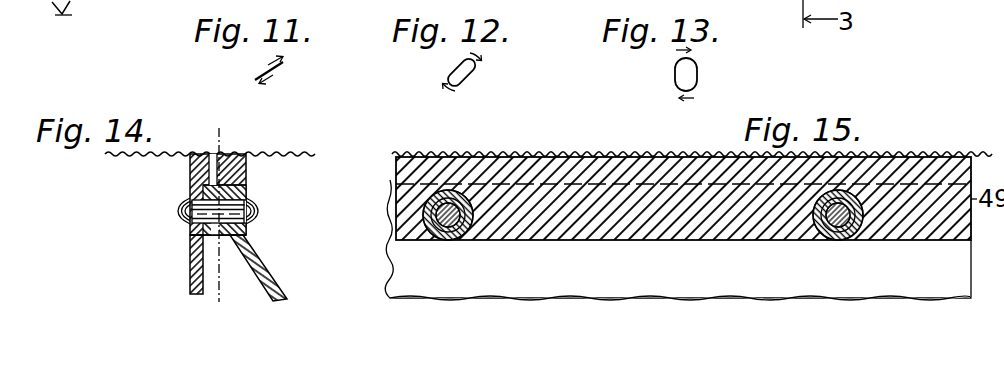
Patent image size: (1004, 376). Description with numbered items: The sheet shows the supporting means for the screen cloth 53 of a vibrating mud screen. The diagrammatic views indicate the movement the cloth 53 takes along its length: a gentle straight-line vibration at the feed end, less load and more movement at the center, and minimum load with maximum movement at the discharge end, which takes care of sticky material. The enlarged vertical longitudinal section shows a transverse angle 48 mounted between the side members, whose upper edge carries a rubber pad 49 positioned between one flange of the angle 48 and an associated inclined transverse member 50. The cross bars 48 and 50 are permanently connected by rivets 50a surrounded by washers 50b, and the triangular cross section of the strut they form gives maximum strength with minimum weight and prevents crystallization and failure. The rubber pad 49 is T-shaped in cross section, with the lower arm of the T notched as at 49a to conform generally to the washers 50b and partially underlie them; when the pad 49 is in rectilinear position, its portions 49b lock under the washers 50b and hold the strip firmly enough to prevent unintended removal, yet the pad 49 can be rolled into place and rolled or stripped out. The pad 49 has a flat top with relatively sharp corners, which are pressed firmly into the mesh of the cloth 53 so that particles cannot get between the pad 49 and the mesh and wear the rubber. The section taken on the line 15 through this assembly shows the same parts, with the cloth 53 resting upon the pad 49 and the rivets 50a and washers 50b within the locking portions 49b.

In FIG. 14, the section line 15 is at (222, 131).
In FIG. 14, the transverse angle 48 is at (190, 263).
In FIG. 15, the transverse angle 48 is at (390, 256).
In FIG. 14, the rubber pad 49 is at (190, 168).
In FIG. 15, the rubber pad 49 is at (615, 183).
In FIG. 14, the notch 49a is at (213, 154).
In FIG. 15, the notch 49a is at (443, 200).
In FIG. 15, the locking portions 49b is at (425, 240).
In FIG. 14, the inclined transverse member 50 is at (261, 263).
In FIG. 14, the rivet 50a is at (205, 216).
In FIG. 15, the rivet 50a is at (851, 274).
In FIG. 14, the washer 50b is at (205, 203).
In FIG. 15, the washer 50b is at (834, 240).
In FIG. 14, the screen cloth 53 is at (296, 153).
In FIG. 15, the screen cloth 53 is at (434, 153).